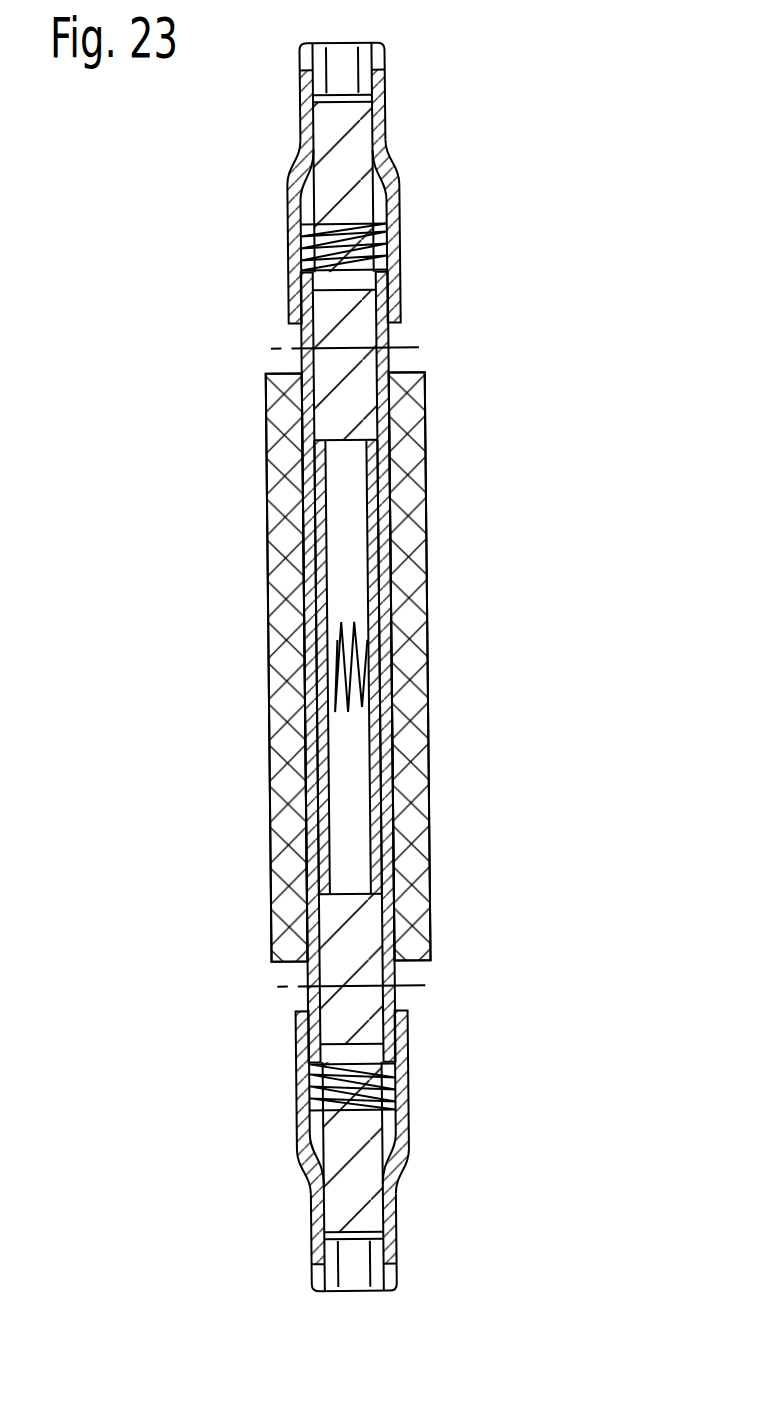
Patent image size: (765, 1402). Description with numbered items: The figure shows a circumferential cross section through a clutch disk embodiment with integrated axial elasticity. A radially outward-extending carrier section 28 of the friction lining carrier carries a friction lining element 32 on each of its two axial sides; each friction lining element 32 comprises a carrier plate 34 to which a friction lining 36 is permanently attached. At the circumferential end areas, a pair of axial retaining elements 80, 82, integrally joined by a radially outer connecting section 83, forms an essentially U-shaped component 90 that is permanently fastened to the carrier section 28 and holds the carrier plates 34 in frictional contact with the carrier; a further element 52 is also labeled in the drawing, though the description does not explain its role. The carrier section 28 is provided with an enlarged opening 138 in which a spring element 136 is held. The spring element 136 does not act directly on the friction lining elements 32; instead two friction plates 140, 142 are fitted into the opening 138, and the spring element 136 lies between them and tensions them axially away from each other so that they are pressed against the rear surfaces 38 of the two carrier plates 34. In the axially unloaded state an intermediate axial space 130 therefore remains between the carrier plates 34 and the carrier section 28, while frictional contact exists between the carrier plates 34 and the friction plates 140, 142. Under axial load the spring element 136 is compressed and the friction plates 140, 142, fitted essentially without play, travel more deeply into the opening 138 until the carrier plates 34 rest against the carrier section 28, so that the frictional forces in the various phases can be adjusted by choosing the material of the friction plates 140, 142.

The carrier section 28 is at (372, 975).
The friction lining element 32 is at (364, 667).
The carrier plate 34 is at (305, 758).
The friction lining 36 is at (268, 673).
The rear surface 38 is at (303, 485).
The spring 52 is at (300, 285).
The axial retaining element 80 is at (300, 232).
The axial retaining element 82 is at (400, 188).
The connecting section 83 is at (365, 44).
The component 90 is at (300, 127).
The intermediate axial space 130 is at (388, 333).
The spring element 136 is at (393, 626).
The opening 138 is at (408, 480).
The friction plate 140 is at (313, 536).
The friction plate 142 is at (393, 547).